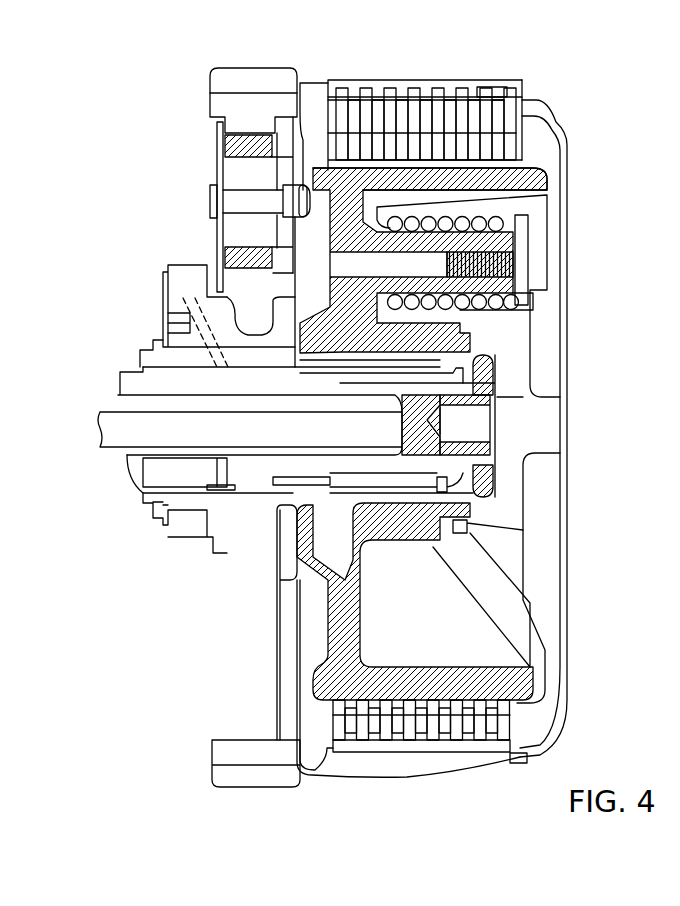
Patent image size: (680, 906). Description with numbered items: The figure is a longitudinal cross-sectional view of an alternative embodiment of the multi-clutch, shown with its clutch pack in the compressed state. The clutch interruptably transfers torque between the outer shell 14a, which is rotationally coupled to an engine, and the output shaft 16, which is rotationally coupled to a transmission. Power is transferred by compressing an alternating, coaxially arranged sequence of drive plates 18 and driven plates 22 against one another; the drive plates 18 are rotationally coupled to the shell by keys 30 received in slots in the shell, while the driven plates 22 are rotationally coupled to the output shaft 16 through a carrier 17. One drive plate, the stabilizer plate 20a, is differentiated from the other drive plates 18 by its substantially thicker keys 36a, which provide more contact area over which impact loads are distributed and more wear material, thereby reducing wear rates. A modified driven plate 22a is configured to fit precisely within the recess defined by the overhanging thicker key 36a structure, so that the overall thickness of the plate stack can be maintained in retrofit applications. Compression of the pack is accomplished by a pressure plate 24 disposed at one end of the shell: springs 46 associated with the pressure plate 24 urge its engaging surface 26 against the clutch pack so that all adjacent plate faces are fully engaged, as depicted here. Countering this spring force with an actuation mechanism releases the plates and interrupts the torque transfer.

The outer shell 14a is at (317, 82).
The output shaft 16 is at (122, 375).
The carrier 17 is at (505, 193).
The drive plates 18 is at (400, 113).
The stabilizer plate 20a is at (482, 115).
The driven plates 22 is at (355, 122).
The modified driven plate 22a is at (502, 117).
The pressure plate 24 is at (555, 150).
The engaging surface 26 is at (510, 120).
The keys 30 is at (403, 102).
The thicker keys 36a is at (497, 90).
The springs 46 is at (505, 300).